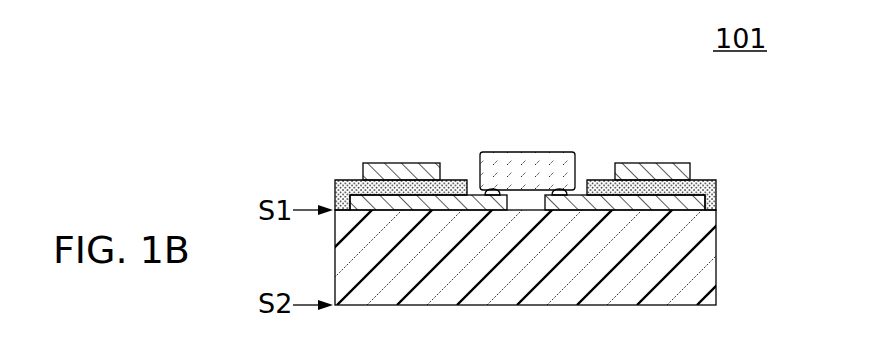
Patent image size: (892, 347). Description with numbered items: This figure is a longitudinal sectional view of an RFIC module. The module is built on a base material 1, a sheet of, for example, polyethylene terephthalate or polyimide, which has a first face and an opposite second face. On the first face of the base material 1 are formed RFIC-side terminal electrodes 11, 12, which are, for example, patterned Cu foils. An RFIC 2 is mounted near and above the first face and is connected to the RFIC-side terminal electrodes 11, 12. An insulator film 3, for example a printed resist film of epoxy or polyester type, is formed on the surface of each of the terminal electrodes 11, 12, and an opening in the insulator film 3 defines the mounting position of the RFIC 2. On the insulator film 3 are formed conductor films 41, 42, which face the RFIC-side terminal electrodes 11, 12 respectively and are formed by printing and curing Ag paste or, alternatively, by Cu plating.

The base material 1 is at (708, 247).
The RFIC 2 is at (528, 165).
The insulator film 3 is at (715, 190).
The RFIC-side terminal electrode 11 is at (387, 197).
The RFIC-side terminal electrode 12 is at (675, 198).
The conductor film 41 is at (402, 165).
The conductor film 42 is at (638, 168).